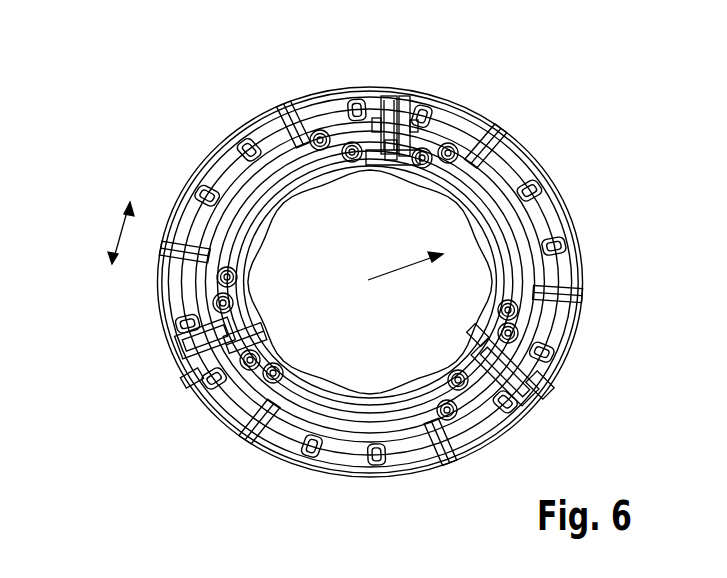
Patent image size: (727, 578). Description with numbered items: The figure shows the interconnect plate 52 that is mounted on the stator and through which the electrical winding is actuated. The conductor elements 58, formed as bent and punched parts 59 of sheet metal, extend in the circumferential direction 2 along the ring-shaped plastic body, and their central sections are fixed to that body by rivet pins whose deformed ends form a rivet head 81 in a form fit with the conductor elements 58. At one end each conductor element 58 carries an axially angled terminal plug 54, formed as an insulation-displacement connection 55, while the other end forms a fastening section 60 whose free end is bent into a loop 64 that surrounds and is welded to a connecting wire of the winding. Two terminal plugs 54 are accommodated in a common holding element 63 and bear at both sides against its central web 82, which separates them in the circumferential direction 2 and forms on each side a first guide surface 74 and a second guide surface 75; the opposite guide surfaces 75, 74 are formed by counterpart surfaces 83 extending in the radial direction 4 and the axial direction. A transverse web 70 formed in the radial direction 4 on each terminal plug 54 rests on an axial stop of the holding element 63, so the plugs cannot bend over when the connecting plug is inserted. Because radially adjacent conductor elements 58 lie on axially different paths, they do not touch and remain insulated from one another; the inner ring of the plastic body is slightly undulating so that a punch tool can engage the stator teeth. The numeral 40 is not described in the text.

The circumferential direction 2 is at (118, 228).
The radial direction 4 is at (392, 282).
The outer ring 40 is at (205, 168).
The interconnect plate 52 is at (345, 103).
The terminal plug 54 is at (422, 97).
The insulation-displacement connection 55 is at (405, 115).
The conductor element 58 is at (433, 282).
The bent and punched part 59 is at (503, 243).
The fastening section 60 is at (477, 140).
The holding element 63 is at (550, 387).
The loop 64 is at (453, 447).
The transverse web 70 is at (392, 150).
The first guide surface 74 is at (172, 325).
The second guide surface 75 is at (250, 345).
The rivet head 81 is at (300, 127).
The central web 82 is at (558, 360).
The counterpart surface 83 is at (466, 378).